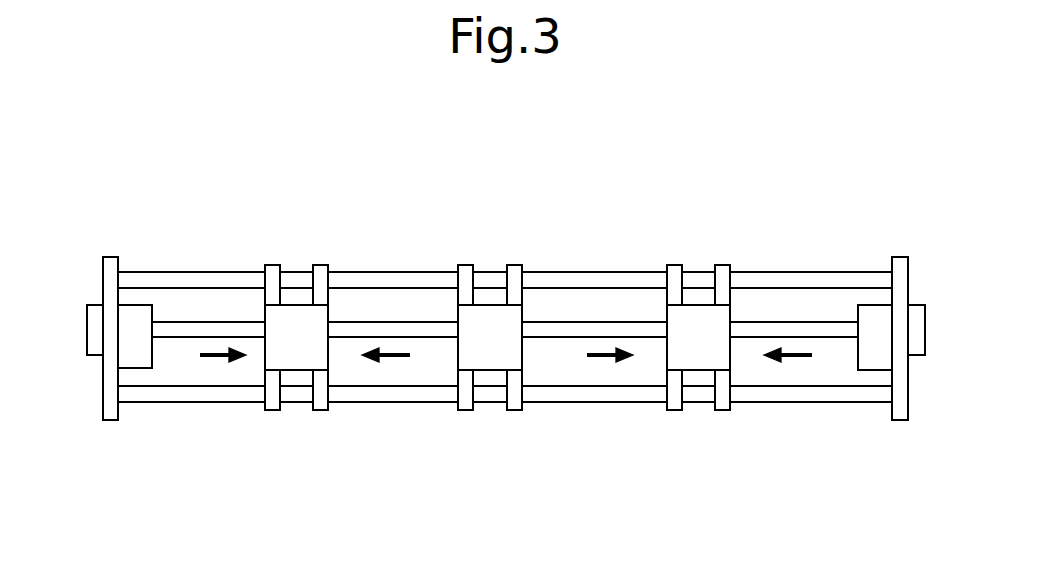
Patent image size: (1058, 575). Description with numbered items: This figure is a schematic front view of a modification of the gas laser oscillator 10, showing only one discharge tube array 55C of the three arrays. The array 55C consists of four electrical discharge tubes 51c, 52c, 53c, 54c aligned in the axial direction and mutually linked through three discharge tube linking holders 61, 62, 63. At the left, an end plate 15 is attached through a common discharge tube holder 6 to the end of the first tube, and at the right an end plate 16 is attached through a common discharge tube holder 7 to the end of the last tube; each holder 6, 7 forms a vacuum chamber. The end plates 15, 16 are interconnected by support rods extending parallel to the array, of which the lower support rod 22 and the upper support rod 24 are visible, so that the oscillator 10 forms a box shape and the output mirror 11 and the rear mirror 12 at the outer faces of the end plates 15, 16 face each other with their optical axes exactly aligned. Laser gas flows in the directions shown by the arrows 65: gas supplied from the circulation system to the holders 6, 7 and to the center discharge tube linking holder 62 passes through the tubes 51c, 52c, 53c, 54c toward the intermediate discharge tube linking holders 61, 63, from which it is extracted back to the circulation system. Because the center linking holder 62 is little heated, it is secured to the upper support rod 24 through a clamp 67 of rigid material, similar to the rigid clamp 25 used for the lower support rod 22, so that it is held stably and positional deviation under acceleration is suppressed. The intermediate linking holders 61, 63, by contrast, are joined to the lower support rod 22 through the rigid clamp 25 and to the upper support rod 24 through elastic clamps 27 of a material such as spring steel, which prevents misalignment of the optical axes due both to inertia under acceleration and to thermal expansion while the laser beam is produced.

The laser oscillator 10 is at (395, 176).
The output mirror 11 is at (94, 322).
The rear mirror 12 is at (917, 324).
The end plate 15 is at (110, 257).
The end plate 16 is at (900, 263).
The discharge tube holder 6 is at (137, 357).
The discharge tube holder 7 is at (876, 320).
The support rod 22 is at (852, 402).
The support rod 24 is at (167, 283).
The clamp 25 is at (274, 402).
The clamp 27 is at (272, 272).
The clamp 67 is at (465, 275).
The electrical discharge tube 51c is at (207, 330).
The electrical discharge tube 52c is at (410, 330).
The electrical discharge tube 53c is at (600, 330).
The electrical discharge tube 54c is at (805, 330).
The discharge tube linking holder 61 is at (295, 322).
The discharge tube linking holder 62 is at (490, 322).
The discharge tube linking holder 63 is at (703, 318).
The arrow 65 is at (218, 360).
The discharge tube array 55C is at (186, 338).